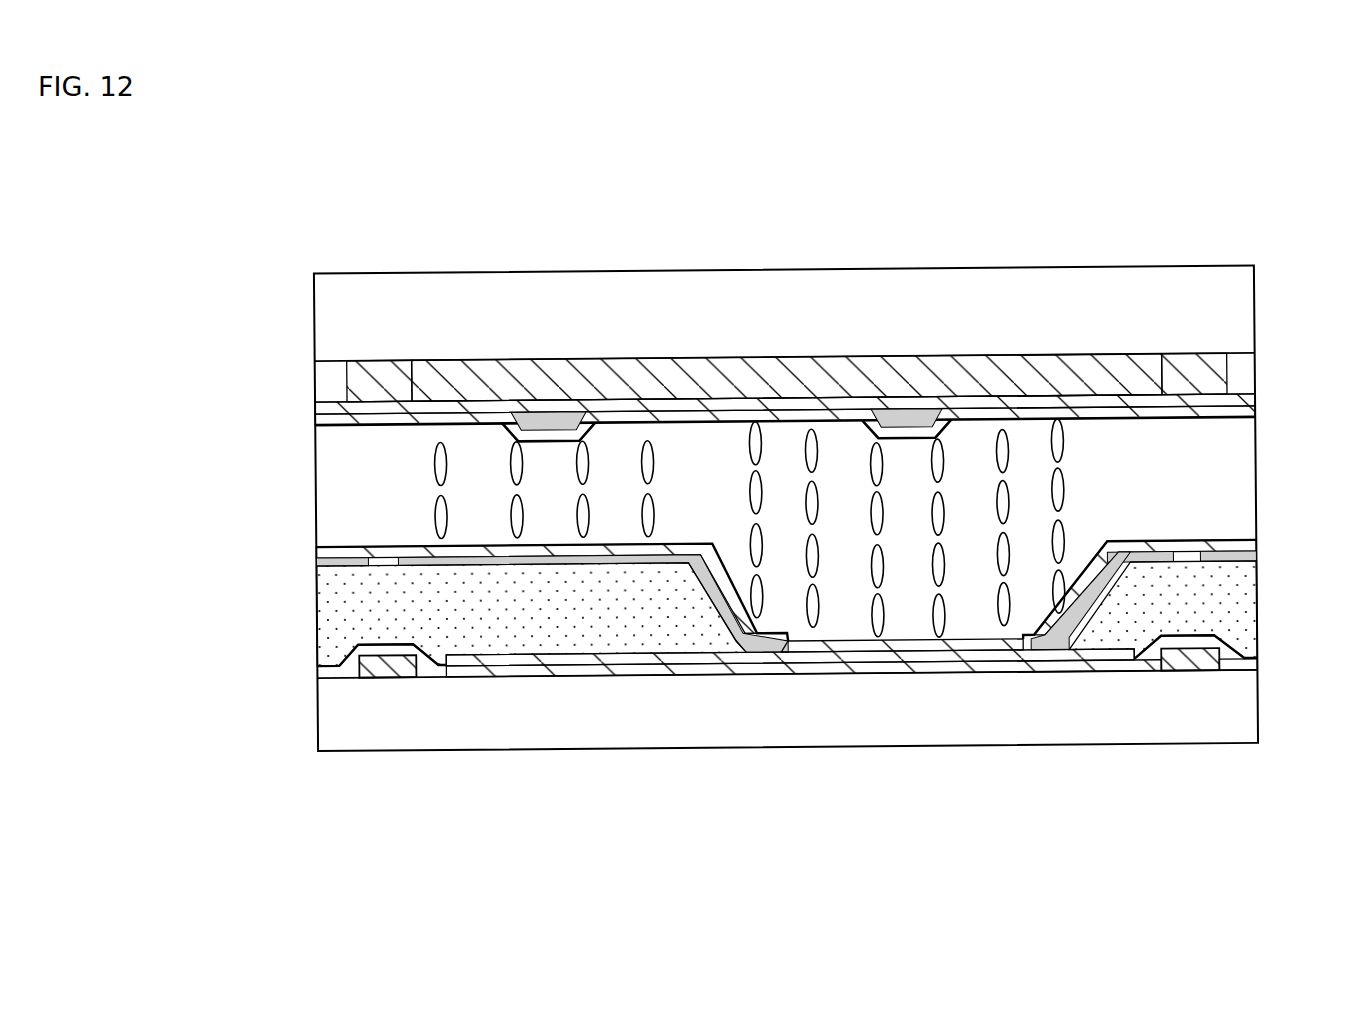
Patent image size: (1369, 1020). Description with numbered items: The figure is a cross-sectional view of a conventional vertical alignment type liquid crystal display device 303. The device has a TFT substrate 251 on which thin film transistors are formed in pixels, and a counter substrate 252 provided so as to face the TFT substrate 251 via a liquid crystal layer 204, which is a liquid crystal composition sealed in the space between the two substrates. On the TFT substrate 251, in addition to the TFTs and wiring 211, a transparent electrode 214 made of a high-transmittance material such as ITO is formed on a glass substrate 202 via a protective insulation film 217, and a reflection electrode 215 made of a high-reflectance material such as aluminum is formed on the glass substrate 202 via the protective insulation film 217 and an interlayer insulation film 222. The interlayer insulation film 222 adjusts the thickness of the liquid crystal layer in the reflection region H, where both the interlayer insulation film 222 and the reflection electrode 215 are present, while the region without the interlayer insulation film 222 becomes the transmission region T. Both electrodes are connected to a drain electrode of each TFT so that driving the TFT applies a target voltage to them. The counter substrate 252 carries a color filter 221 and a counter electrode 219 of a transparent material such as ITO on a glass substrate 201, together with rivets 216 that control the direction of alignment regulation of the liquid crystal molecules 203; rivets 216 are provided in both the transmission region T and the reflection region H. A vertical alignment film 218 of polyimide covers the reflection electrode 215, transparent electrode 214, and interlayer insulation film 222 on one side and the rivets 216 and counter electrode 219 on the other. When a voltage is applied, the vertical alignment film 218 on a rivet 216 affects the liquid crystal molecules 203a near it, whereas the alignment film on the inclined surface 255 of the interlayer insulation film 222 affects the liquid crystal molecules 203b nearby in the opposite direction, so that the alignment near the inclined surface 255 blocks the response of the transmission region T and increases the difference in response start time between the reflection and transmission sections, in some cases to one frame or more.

The liquid crystal display device 303 is at (1251, 189).
The glass substrate 201 is at (1258, 303).
The glass substrate 202 is at (1258, 716).
The counter substrate 252 is at (314, 314).
The TFT substrate 251 is at (314, 707).
The liquid crystal layer 204 is at (1259, 484).
The color filter 221 is at (774, 380).
The counter electrode 219 is at (1258, 398).
The vertical alignment film 218 is at (1258, 418).
The rivet 216 is at (555, 408).
The reflection region H is at (702, 447).
The transmission region T is at (909, 463).
The liquid crystal molecules 203 is at (433, 459).
The liquid crystal molecules 203a is at (944, 514).
The liquid crystal molecules 203b is at (763, 548).
The reflection electrode 215 is at (526, 559).
The interlayer insulation film 222 is at (1258, 616).
The transparent electrode 214 is at (973, 648).
The protective insulation film 217 is at (1258, 664).
The wiring 211 is at (387, 660).
The inclined surface 255 is at (733, 612).